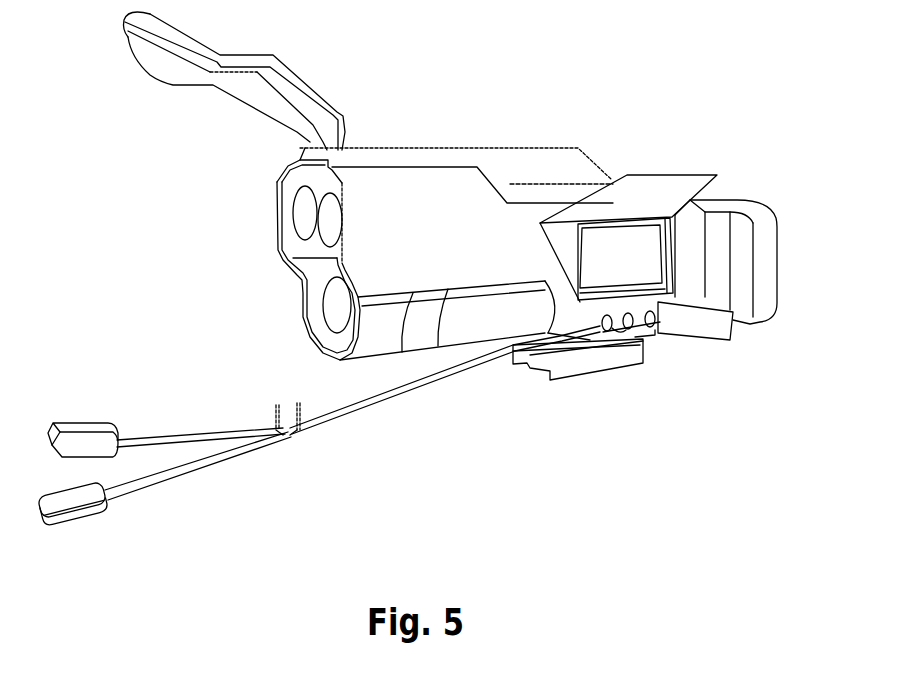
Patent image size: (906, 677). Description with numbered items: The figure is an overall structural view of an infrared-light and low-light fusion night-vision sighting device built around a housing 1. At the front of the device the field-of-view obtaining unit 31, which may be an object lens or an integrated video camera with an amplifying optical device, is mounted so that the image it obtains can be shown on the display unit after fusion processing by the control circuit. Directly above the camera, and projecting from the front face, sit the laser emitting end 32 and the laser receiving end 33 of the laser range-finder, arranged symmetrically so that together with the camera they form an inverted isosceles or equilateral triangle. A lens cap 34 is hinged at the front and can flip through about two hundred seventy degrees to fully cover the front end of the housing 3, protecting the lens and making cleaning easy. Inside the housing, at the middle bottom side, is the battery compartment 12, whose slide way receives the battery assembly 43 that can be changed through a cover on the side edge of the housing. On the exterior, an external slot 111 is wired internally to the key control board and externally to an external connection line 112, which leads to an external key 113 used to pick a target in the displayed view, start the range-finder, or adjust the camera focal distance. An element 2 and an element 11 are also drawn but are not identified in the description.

The housing 1 is at (512, 223).
The battery pack 2 is at (747, 223).
The housing front end 3 is at (300, 193).
The mounting rail 11 is at (628, 370).
The battery compartment 12 is at (565, 243).
The field-of-view obtaining unit 31 is at (332, 310).
The laser emitting end 32 is at (259, 204).
The laser receiving end 33 is at (300, 212).
The lens cap 34 is at (187, 72).
The battery assembly 43 is at (627, 280).
The external slot 111 is at (640, 320).
The external connection line 112 is at (332, 423).
The external key 113 is at (93, 443).